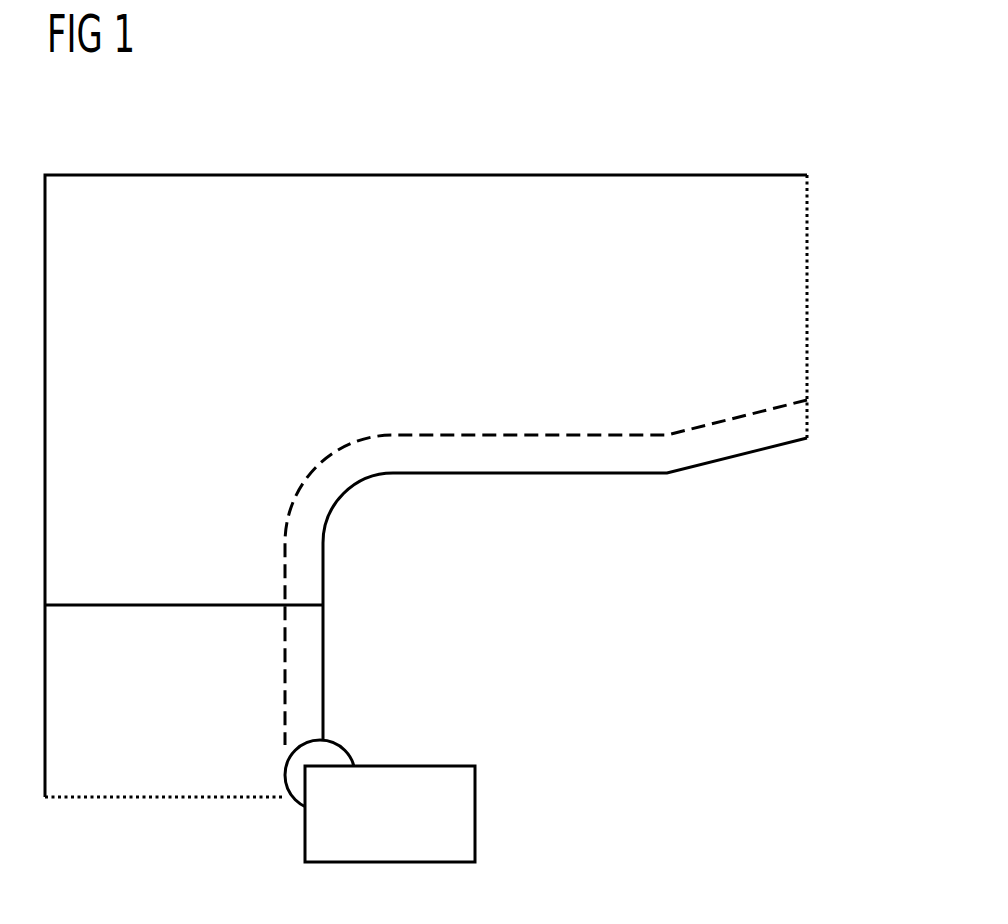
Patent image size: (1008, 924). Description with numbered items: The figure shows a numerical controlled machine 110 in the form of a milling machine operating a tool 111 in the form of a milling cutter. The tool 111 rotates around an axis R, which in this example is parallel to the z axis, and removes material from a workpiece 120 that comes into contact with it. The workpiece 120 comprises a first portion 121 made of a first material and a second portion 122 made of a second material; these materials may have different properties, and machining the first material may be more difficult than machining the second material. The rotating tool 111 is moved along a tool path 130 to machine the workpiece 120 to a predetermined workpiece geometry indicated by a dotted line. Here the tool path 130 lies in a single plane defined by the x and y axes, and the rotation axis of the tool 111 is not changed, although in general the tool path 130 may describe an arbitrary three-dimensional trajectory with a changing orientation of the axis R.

The numerical controlled machine 110 is at (465, 813).
The tool 111 is at (340, 750).
The workpiece 120 is at (136, 154).
The first portion 121 is at (803, 288).
The second portion 122 is at (165, 790).
The tool path 130 is at (465, 465).